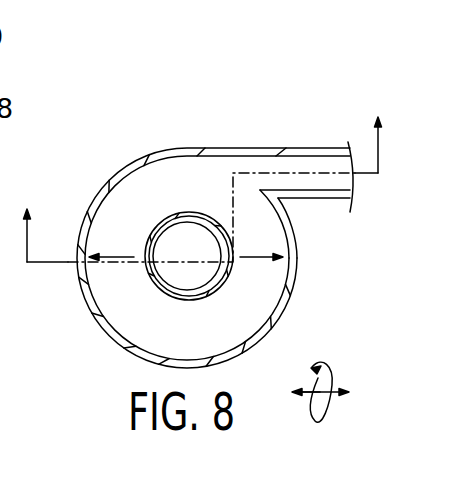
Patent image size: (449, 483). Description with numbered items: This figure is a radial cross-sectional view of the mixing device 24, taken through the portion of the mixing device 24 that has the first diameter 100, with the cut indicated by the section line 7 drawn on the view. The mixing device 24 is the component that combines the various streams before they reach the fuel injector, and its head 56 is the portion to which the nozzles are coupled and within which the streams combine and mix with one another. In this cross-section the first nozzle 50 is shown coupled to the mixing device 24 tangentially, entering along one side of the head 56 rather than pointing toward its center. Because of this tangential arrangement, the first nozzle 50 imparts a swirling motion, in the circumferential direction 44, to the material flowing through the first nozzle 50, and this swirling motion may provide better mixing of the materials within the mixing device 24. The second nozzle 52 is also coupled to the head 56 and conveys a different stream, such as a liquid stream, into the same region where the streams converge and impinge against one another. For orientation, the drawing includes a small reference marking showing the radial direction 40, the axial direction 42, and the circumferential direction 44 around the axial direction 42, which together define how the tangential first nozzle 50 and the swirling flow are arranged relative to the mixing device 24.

The mixing device 24 is at (208, 97).
The head 56 is at (157, 152).
The first nozzle 50 is at (316, 200).
The second nozzle 52 is at (182, 303).
The first diameter 100 is at (134, 256).
The section line 7- 7 is at (204, 181).
The radial direction 40 is at (330, 393).
The axial direction 42 is at (292, 386).
The circumferential direction 44 is at (330, 362).